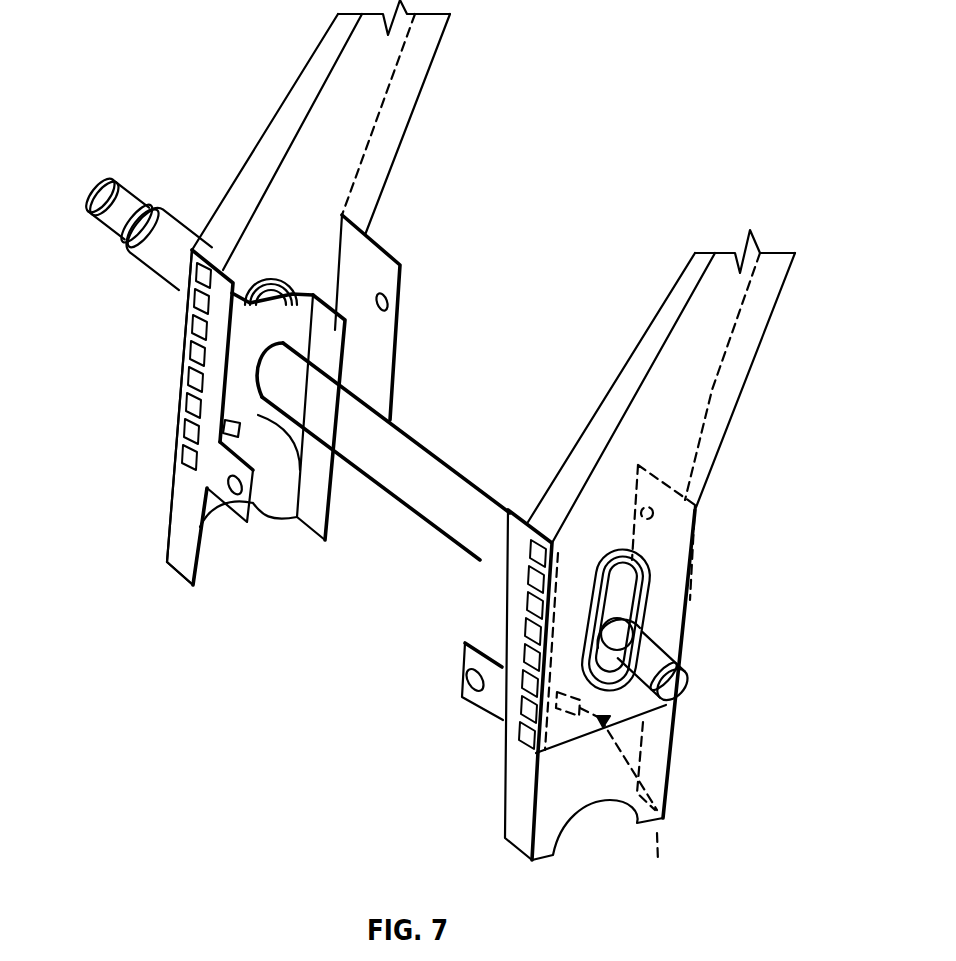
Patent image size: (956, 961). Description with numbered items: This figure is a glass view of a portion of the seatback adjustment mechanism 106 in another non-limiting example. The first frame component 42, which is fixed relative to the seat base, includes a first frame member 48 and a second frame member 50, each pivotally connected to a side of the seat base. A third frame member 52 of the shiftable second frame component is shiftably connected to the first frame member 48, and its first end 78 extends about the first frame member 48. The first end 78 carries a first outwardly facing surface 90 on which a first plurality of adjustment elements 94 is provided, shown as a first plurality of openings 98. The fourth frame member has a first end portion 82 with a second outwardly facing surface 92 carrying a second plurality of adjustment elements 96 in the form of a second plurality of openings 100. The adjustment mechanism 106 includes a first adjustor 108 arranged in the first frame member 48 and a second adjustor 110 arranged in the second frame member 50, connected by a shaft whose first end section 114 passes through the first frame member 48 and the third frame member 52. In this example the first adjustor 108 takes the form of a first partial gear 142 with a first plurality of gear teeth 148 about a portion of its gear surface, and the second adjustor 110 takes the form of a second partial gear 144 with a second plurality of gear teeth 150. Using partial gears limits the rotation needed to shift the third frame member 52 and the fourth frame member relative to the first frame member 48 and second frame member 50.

The first frame component 42 is at (157, 562).
The first frame member 48 is at (678, 808).
The second frame member 50 is at (163, 542).
The third frame member 52 is at (733, 455).
The first end 78 is at (627, 708).
The first end portion 82 is at (178, 427).
The first outwardly facing surface 90 is at (502, 713).
The second outwardly facing surface 92 is at (187, 337).
The first plurality of adjustment elements 94 is at (508, 702).
The second plurality of adjustment elements 96 is at (185, 296).
The first plurality of openings 98 is at (523, 682).
The second plurality of openings 100 is at (188, 380).
The adjustment mechanism 106 is at (570, 532).
The first adjustor 108 is at (641, 804).
The second adjustor 110 is at (278, 322).
The first end section 114 is at (682, 690).
The first partial gear 142 is at (585, 620).
The second partial gear 144 is at (320, 541).
The first plurality of gear teeth 148 is at (532, 603).
The second plurality of gear teeth 150 is at (245, 292).